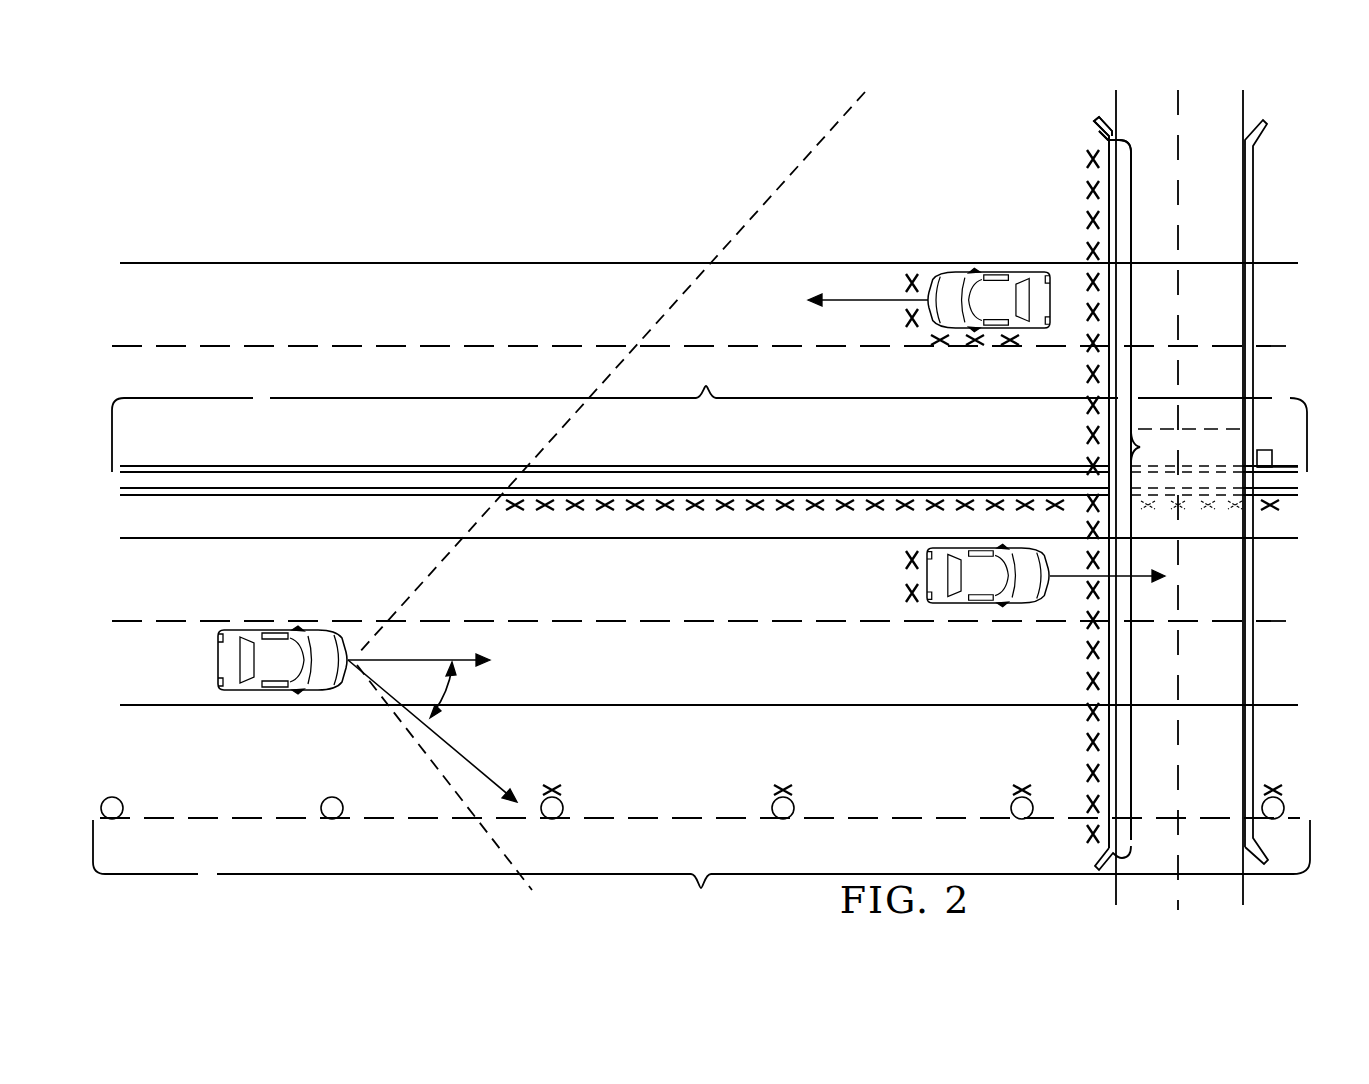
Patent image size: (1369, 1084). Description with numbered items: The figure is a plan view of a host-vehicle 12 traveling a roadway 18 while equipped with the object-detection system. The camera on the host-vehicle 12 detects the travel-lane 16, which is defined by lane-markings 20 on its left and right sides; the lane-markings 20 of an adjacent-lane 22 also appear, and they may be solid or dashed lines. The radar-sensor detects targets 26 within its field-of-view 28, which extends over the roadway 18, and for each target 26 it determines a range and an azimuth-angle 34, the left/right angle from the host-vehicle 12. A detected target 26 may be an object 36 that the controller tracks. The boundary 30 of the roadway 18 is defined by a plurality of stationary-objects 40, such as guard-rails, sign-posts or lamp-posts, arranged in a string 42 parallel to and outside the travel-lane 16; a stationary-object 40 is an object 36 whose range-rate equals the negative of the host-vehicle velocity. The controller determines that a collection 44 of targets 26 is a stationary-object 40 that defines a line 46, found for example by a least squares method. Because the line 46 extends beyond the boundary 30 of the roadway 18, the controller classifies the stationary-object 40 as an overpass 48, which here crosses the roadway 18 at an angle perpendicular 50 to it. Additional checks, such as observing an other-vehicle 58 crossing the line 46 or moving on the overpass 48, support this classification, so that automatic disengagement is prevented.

The host-vehicle 12 is at (278, 632).
The travel-lane 16 is at (188, 690).
The roadway 18 is at (232, 202).
The lane-marking 20 is at (474, 345).
The adjacent-lane 22 is at (610, 590).
The target 26 is at (908, 280).
The field-of-view 28 is at (740, 228).
The boundary 30 is at (283, 476).
The azimuth-angle 34 is at (443, 693).
The object 36 is at (775, 803).
The stationary-object 40 is at (437, 466).
The string 42 is at (701, 637).
The collection 44 is at (1187, 462).
The line 46 is at (1093, 380).
The overpass 48 is at (1233, 640).
The angle perpendicular 50 is at (1268, 450).
The other-vehicle 58 is at (995, 283).